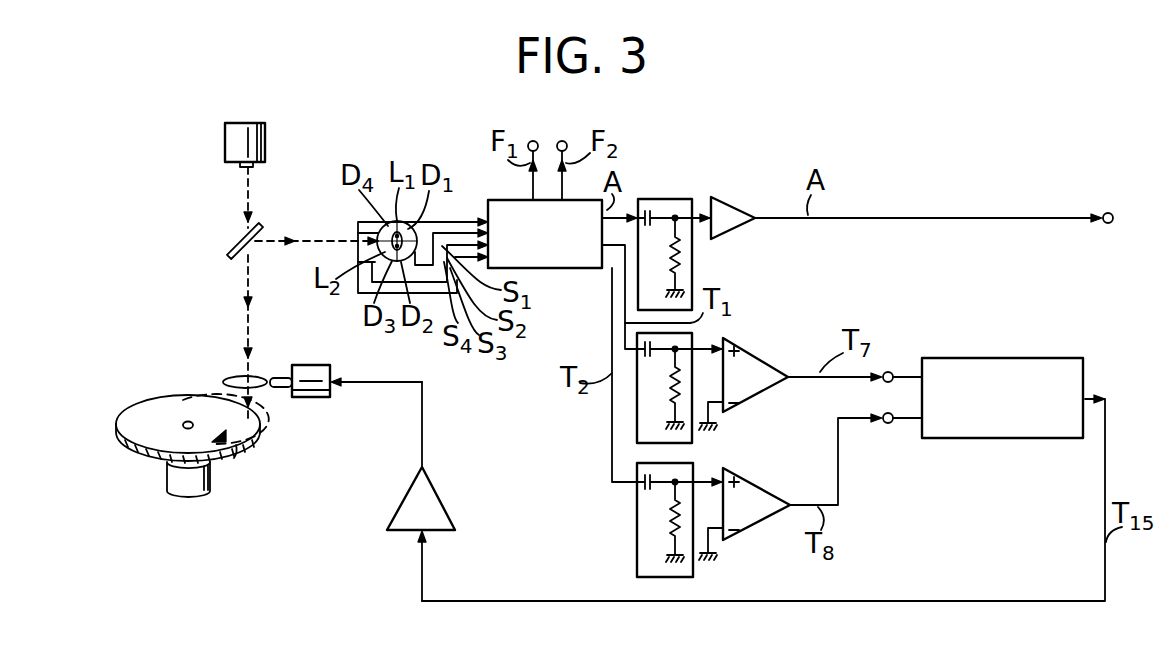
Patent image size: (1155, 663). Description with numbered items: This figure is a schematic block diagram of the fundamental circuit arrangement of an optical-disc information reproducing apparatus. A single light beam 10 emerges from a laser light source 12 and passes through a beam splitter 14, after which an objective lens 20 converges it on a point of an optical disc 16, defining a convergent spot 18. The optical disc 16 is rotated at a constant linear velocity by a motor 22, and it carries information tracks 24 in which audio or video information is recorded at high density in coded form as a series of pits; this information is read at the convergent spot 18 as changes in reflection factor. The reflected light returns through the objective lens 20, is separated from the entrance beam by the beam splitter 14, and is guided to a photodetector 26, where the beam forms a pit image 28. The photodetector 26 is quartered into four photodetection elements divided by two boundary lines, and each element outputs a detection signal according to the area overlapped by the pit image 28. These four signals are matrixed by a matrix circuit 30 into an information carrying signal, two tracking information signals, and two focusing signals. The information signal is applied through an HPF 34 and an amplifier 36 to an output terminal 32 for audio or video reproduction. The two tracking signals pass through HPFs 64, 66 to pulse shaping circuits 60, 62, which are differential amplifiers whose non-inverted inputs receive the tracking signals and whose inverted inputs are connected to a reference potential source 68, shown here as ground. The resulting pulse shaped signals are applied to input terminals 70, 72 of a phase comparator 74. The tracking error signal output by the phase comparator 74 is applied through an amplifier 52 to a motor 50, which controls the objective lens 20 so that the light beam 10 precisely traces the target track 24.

The light beam 10 is at (247, 333).
The laser light source 12 is at (225, 143).
The beam splitter 14 is at (233, 244).
The optical disc 16 is at (242, 440).
The convergent spot 18 is at (258, 428).
The objective lens 20 is at (224, 381).
The motor 22 is at (211, 487).
The information tracks 24 is at (232, 450).
The photodetector 26 is at (358, 230).
The pit image 28 is at (409, 231).
The matrix circuit 30 is at (553, 269).
The output terminal 32 is at (1108, 224).
The HPF 34 is at (662, 203).
The amplifier 36 is at (727, 209).
The motor 50 is at (316, 366).
The amplifier 52 is at (433, 517).
The pulse shaping circuit 60 is at (757, 367).
The pulse shaping circuit 62 is at (763, 503).
The HPF 64 is at (683, 340).
The HPF 66 is at (644, 538).
The reference potential source 68 is at (718, 422).
The input terminal 70 is at (883, 381).
The input terminal 72 is at (885, 424).
The phase comparator 74 is at (1000, 357).